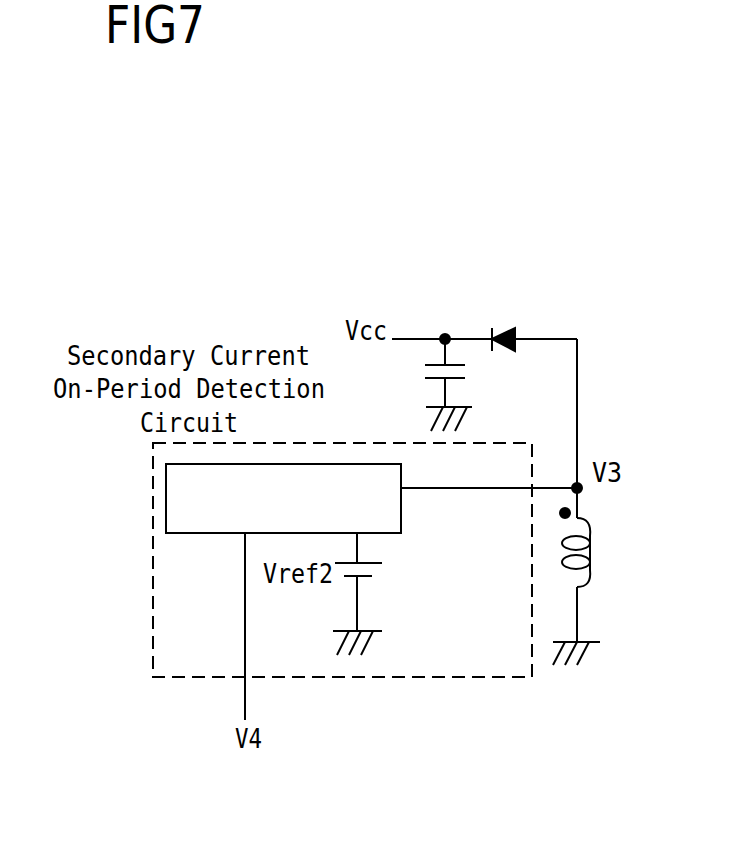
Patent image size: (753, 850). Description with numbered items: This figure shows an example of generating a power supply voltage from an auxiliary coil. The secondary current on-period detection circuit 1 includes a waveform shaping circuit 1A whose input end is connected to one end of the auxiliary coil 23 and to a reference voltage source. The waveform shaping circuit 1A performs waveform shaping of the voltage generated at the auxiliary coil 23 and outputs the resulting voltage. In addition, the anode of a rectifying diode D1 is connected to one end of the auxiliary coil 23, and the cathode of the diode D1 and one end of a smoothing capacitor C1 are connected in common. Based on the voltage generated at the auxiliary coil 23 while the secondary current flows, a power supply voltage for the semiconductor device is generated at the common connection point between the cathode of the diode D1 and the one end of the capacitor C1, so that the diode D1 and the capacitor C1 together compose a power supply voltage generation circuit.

The secondary current on-period detection circuit 1 is at (524, 443).
The waveform shaping circuit 1A is at (404, 513).
The smoothing capacitor C1 is at (466, 371).
The rectifying diode D1 is at (497, 326).
The auxiliary coil 23 is at (598, 546).